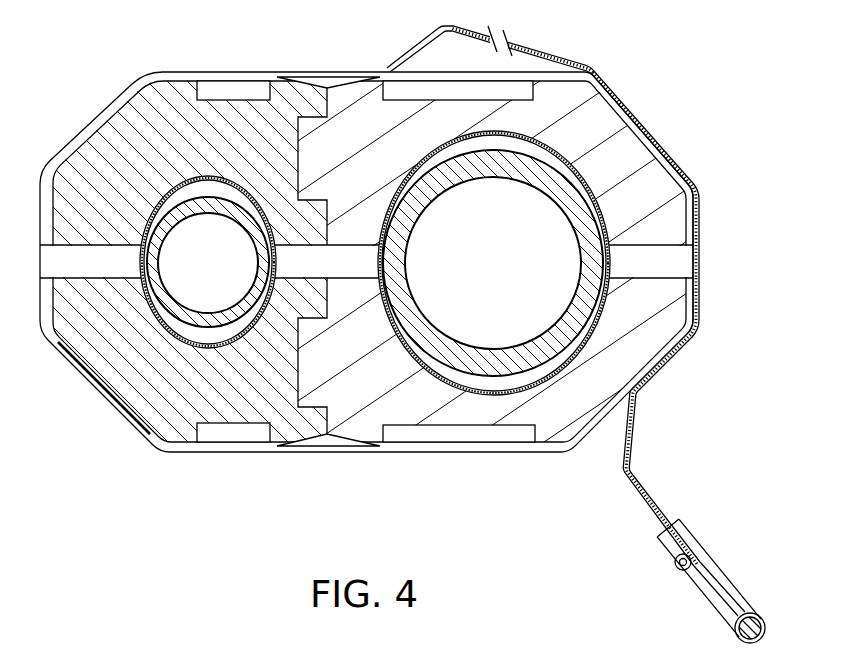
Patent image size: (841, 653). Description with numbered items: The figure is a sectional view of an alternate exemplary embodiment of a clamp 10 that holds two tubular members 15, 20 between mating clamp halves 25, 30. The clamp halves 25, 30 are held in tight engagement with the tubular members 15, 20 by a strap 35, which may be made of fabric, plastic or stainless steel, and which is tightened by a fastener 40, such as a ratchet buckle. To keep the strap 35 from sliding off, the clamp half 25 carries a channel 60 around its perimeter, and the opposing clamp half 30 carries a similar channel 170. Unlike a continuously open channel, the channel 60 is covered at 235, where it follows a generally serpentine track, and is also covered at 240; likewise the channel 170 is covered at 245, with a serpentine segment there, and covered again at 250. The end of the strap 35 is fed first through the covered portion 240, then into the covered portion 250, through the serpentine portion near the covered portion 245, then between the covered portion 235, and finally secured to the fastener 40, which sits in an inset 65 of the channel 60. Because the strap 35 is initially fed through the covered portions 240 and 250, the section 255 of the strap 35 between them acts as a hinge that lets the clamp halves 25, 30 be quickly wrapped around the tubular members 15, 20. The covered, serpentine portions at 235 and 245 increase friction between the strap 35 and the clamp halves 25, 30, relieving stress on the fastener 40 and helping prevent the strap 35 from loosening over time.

The clamp 10 is at (96, 63).
The tubular member 15 is at (199, 203).
The tubular member 20 is at (493, 172).
The clamp half 25 is at (123, 441).
The clamp half 30 is at (254, 23).
The strap 35 is at (418, 50).
The fastener 40 is at (713, 593).
The channel 60 is at (187, 447).
The inset 65 is at (427, 431).
The channel 170 is at (184, 32).
The covered portion 235 is at (326, 462).
The covered portion 240 is at (725, 297).
The covered portion 245 is at (326, 68).
The covered portion 250 is at (665, 117).
The section of strap 255 is at (707, 259).